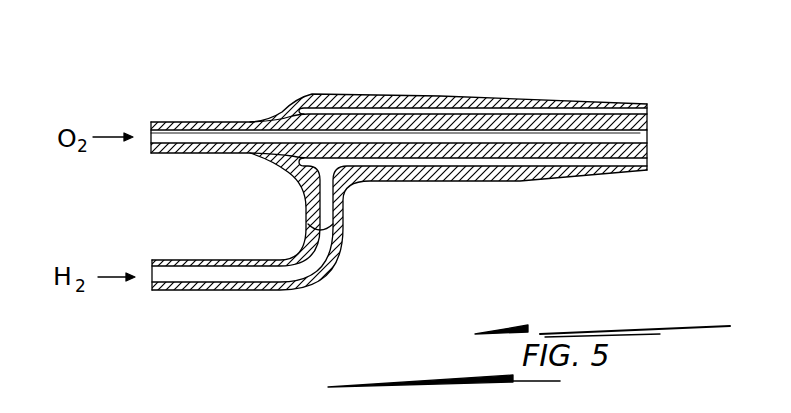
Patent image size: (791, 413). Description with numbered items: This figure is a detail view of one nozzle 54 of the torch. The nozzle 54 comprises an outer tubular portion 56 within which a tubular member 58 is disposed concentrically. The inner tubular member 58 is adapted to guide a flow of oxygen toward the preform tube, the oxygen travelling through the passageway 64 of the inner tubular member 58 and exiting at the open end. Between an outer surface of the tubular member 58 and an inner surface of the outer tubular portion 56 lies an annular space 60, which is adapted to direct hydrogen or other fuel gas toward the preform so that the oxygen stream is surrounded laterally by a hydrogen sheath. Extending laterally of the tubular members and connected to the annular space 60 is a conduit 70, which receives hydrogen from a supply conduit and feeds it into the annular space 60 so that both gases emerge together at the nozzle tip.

The nozzle 54 is at (463, 95).
The outer tubular portion 56 is at (550, 97).
The tubular member 58 is at (503, 127).
The annular space 60 is at (648, 105).
The passageway 64 is at (573, 130).
The conduit 70 is at (304, 278).